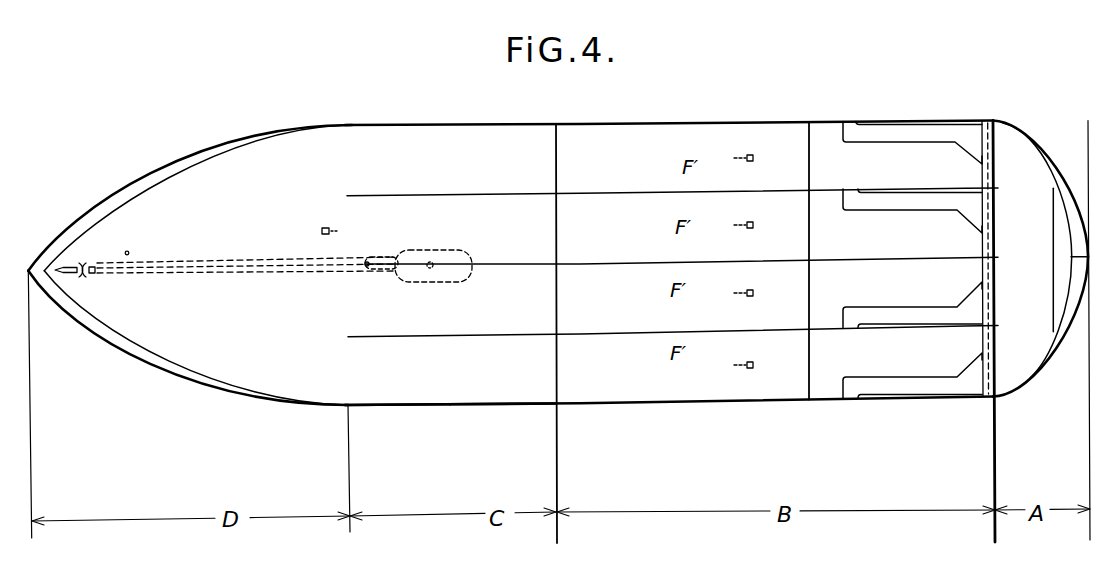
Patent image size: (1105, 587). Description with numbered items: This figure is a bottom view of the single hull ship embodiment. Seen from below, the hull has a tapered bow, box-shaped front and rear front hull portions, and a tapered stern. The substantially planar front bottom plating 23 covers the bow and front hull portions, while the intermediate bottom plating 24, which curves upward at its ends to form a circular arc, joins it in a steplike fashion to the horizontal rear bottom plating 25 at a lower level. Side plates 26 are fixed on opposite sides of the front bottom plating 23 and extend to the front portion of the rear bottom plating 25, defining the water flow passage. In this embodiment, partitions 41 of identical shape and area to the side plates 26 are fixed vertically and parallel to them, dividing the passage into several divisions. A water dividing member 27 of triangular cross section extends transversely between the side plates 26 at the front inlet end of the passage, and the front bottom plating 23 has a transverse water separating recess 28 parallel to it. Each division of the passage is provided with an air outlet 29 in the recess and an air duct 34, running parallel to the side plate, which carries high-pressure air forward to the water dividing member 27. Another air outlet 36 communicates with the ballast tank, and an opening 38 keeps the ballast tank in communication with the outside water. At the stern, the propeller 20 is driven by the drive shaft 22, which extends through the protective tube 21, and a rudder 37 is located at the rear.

The propeller 20 is at (82, 264).
The protective tube 21 is at (197, 262).
The drive shaft 22 is at (247, 263).
The front bottom plating 23 is at (886, 370).
The intermediate bottom plating 24 is at (503, 405).
The rear bottom plating 25 is at (410, 405).
The side plates 26 is at (623, 121).
The water dividing member 27 is at (990, 268).
The water separating recess 28 is at (750, 128).
The air outlet 29 is at (753, 158).
The air duct 34 is at (895, 142).
The air outlet 36 is at (326, 227).
The rudder 37 is at (70, 273).
The opening 38 is at (129, 252).
The partitions 41 is at (627, 262).